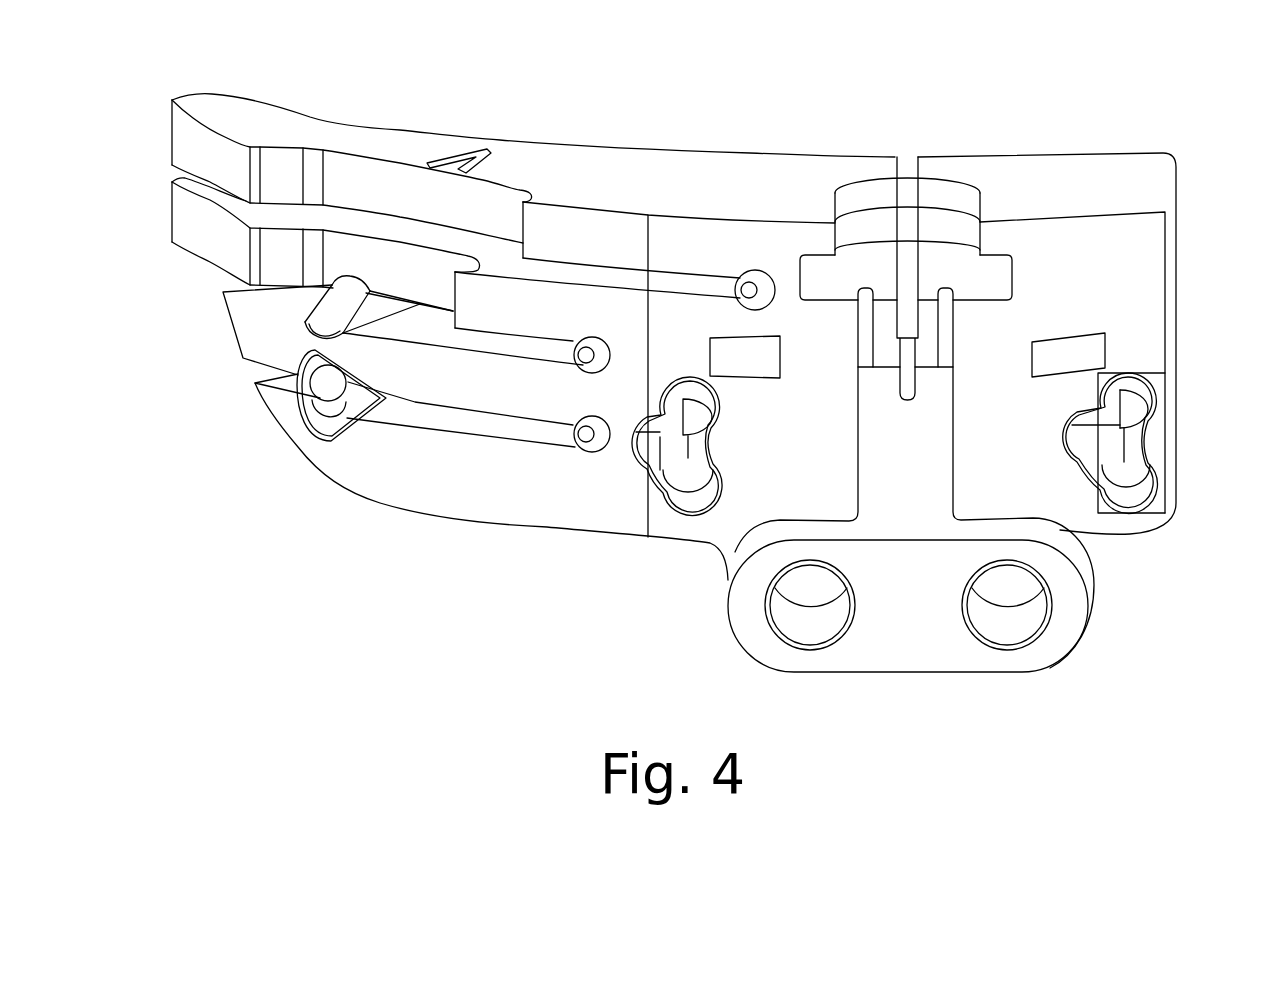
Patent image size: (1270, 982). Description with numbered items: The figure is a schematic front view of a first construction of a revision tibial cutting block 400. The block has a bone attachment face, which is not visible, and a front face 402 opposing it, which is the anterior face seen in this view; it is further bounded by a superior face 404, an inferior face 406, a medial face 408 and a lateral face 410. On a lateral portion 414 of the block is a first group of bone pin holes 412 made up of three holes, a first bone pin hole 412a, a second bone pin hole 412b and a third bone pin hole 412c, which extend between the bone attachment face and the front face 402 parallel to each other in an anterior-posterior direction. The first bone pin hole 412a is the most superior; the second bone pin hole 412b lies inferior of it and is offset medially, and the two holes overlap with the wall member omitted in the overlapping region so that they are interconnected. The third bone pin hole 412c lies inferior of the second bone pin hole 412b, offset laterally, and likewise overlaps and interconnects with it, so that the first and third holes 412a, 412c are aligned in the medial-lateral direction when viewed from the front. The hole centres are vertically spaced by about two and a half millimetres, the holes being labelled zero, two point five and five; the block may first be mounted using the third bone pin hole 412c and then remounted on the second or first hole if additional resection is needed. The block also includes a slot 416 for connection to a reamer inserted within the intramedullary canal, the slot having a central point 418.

The revision tibial cutting block 400 is at (250, 472).
The front face 402 is at (620, 363).
The superior face 404 is at (633, 168).
The inferior face 406 is at (422, 517).
The medial face 408 is at (212, 268).
The lateral face 410 is at (1175, 417).
The first group of bone pin holes 412 is at (1156, 463).
The first bone pin hole 412a is at (1123, 373).
The second bone pin hole 412b is at (1096, 470).
The third bone pin hole 412c is at (1130, 494).
The lateral portion 414 is at (1047, 318).
The slot 416 is at (938, 225).
The central point 418 is at (905, 160).